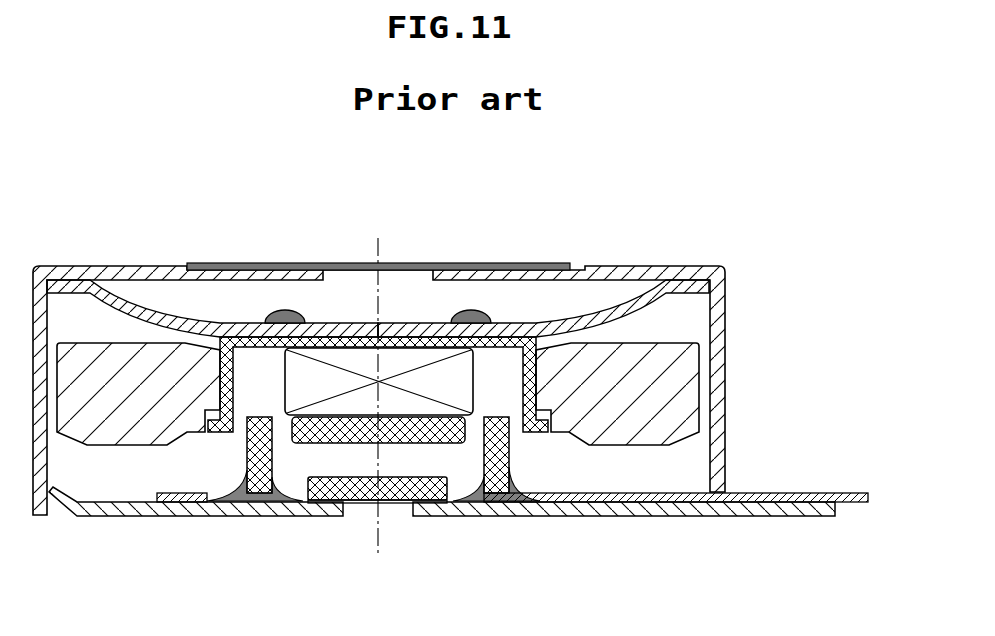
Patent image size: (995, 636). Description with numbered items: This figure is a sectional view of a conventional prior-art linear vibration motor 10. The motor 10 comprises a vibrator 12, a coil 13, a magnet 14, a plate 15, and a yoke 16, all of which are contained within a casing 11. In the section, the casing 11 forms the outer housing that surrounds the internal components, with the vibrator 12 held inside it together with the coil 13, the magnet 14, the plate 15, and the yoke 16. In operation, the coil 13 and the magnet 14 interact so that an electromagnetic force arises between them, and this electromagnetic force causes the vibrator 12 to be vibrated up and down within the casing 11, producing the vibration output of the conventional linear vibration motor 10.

The linear vibration motor 10 is at (153, 193).
The casing 11 is at (718, 330).
The vibrator 12 is at (667, 392).
The coil 13 is at (500, 477).
The magnet 14 is at (395, 405).
The plate 15 is at (342, 433).
The yoke 16 is at (216, 430).